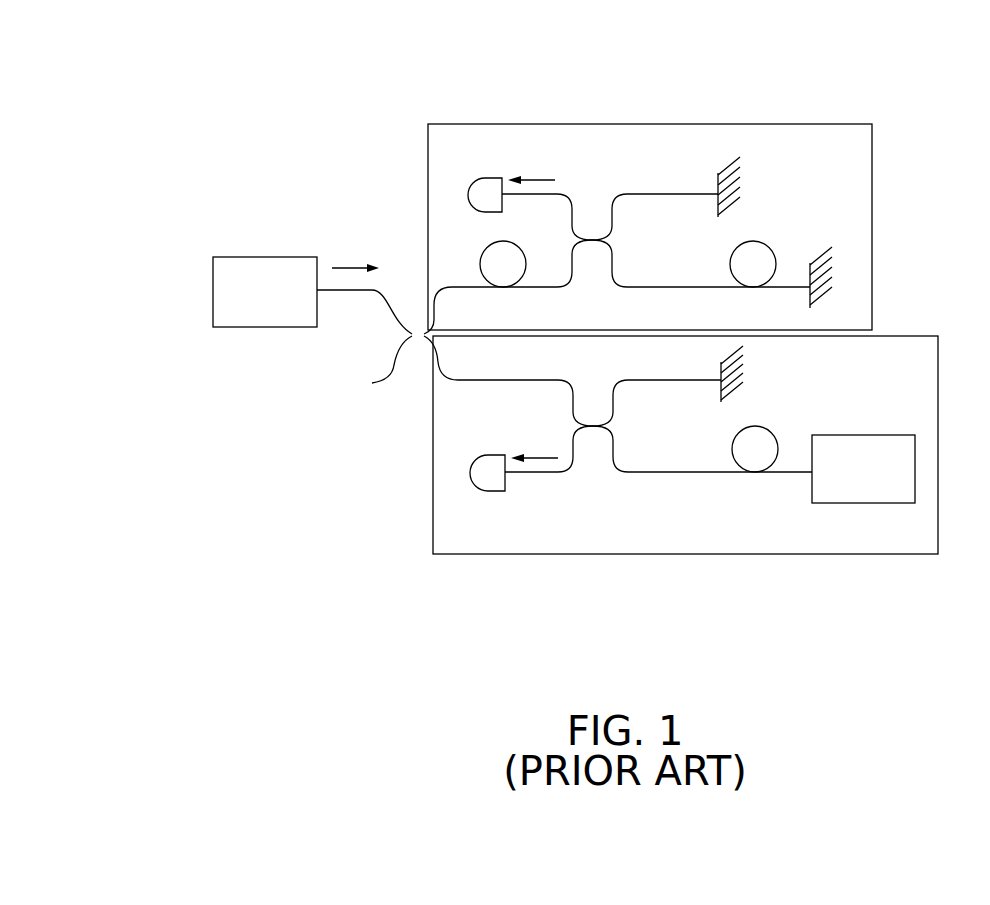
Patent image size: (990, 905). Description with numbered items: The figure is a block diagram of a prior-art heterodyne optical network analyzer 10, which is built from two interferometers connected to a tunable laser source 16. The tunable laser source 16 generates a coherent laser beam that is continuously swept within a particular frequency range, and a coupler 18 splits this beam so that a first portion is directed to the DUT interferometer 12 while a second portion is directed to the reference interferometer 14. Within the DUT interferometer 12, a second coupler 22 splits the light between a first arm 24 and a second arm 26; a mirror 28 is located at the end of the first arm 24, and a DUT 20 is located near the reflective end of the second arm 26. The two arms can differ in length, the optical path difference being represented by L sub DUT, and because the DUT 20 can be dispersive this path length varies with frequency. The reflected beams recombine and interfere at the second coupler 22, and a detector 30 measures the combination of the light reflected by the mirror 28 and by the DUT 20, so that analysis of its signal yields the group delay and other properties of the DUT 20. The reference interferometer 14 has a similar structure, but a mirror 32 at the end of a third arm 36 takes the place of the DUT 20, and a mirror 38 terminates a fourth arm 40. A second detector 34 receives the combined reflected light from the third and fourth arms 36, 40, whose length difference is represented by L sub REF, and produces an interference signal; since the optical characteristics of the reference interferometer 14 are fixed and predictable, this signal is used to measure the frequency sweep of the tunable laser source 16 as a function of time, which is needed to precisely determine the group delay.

The heterodyne optical network analyzer 10 is at (380, 620).
The DUT interferometer 12 is at (441, 540).
The reference interferometer 14 is at (454, 136).
The tunable laser source 16 is at (226, 316).
The coupler 18 is at (410, 340).
The DUT 20 is at (826, 495).
The second coupler 22 is at (595, 432).
The first arm 24 is at (690, 380).
The second arm 26 is at (693, 473).
The mirror 28 is at (733, 396).
The detector 30 is at (478, 475).
The mirror 32 is at (830, 296).
The second detector 34 is at (472, 197).
The third arm 36 is at (690, 288).
The mirror 38 is at (735, 158).
The fourth arm 40 is at (682, 192).